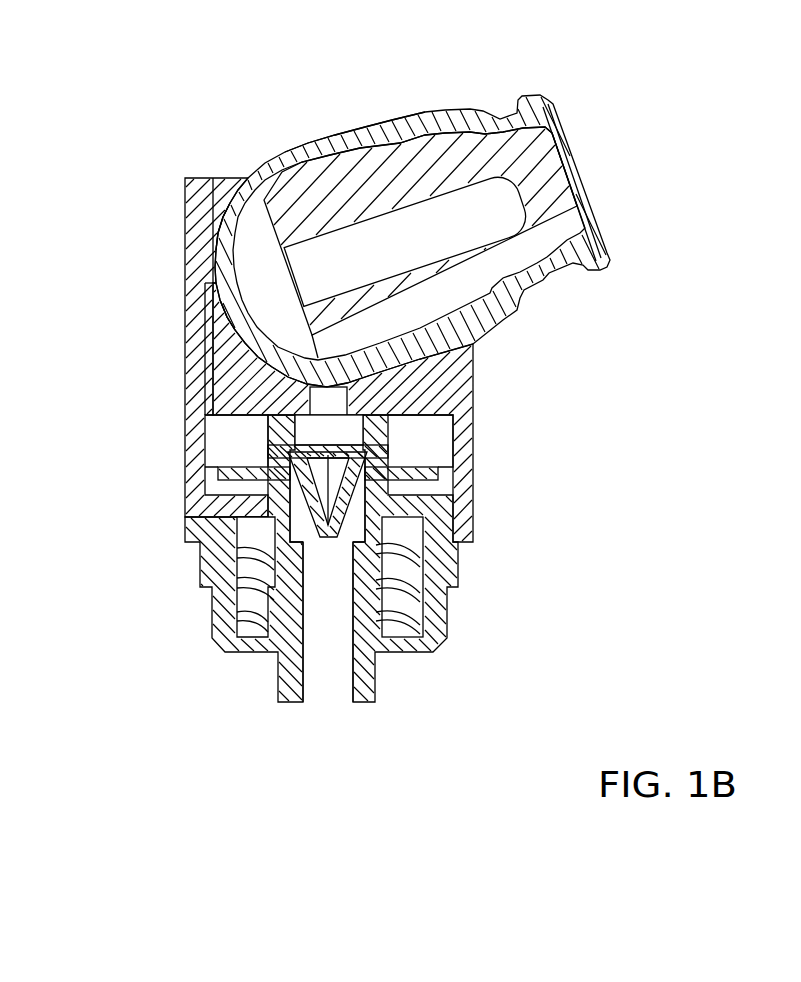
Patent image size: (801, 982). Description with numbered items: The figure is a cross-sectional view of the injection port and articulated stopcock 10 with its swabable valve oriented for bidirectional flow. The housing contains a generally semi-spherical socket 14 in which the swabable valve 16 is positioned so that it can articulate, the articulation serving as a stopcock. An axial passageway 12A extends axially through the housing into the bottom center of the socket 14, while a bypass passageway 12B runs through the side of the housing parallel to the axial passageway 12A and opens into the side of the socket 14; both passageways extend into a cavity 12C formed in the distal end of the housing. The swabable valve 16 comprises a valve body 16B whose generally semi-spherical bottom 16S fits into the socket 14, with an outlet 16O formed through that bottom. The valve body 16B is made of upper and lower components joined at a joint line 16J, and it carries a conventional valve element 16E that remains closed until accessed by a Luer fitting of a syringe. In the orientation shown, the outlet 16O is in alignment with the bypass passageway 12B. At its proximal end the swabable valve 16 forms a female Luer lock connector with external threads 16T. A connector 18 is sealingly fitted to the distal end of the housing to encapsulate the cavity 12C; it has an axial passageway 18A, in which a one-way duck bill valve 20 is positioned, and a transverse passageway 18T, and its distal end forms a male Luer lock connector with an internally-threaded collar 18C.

The injection port and articulated stopcock 10 is at (628, 154).
The axial passageway 12A is at (338, 398).
The bypass passageway 12B is at (223, 403).
The cavity 12C is at (432, 433).
The socket 14 is at (240, 358).
The swabable valve 16 is at (509, 317).
The valve body 16B is at (399, 139).
The valve element 16E is at (433, 170).
The joint line 16J is at (340, 136).
The outlet 16O is at (233, 303).
The semi-spherical bottom 16S is at (214, 242).
The external threads 16T is at (603, 268).
The connector 18 is at (466, 565).
The axial passageway 18A is at (337, 687).
The internally-threaded collar 18C is at (258, 642).
The transverse passageway 18T is at (417, 485).
The one-way duck bill valve 20 is at (315, 527).